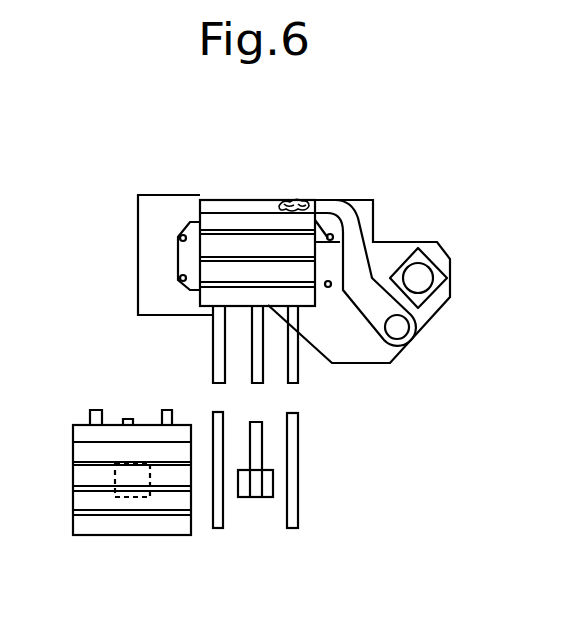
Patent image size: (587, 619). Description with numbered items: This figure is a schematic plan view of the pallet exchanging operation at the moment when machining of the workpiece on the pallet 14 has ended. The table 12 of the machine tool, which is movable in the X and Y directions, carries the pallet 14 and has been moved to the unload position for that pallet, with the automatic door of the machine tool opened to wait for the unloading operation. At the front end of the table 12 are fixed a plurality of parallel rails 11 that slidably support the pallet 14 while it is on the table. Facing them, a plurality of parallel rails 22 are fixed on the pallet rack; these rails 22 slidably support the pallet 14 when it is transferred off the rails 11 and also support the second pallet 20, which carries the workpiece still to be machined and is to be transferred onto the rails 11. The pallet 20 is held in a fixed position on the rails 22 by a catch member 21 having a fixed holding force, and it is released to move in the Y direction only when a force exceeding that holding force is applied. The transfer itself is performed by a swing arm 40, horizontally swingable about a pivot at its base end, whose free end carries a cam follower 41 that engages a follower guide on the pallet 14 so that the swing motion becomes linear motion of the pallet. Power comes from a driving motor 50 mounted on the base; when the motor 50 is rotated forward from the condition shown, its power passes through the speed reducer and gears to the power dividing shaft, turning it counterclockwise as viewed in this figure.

The parallel rails 11 is at (218, 353).
The table 12 is at (152, 213).
The pallet 14 is at (242, 247).
The pallet 20 is at (128, 522).
The catch member 21 is at (268, 488).
The parallel rails 22 is at (217, 443).
The swing arm 40 is at (352, 232).
The cam follower 41 is at (283, 200).
The driving motor 50 is at (410, 280).